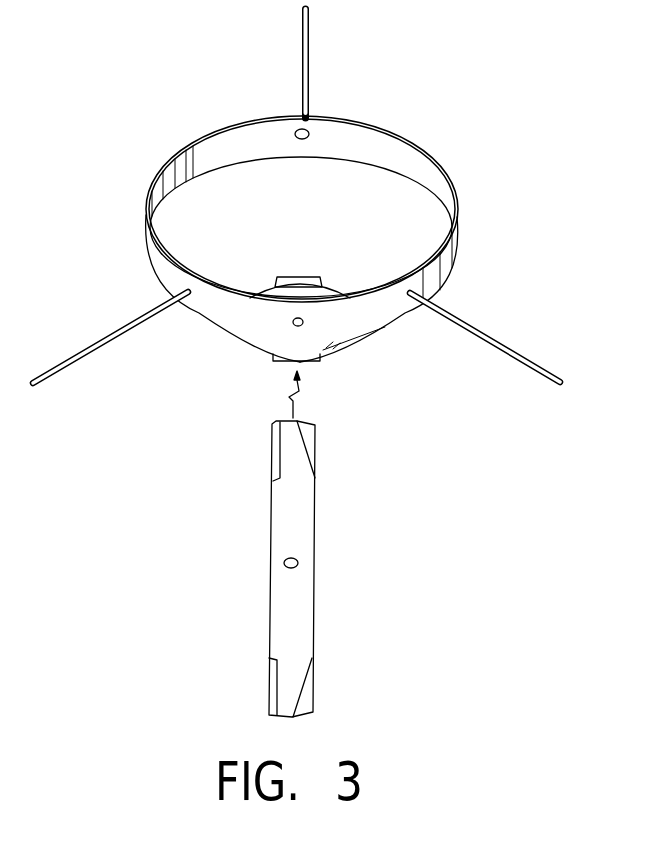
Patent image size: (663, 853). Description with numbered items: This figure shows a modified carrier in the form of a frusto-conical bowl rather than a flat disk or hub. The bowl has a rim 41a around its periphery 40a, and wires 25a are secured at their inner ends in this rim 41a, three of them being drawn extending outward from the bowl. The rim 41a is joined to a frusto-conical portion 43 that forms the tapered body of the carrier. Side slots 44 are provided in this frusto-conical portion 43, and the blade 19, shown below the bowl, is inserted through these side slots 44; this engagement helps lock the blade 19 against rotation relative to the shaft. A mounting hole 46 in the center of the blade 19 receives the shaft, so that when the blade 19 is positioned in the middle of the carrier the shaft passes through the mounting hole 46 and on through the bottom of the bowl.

The blade 19 is at (300, 622).
The wires 25a is at (302, 9).
The periphery 40a is at (393, 147).
The rim 41a is at (362, 318).
The frusto-conical portion 43 is at (237, 229).
The side slots 44 is at (296, 278).
The mounting hole 46 is at (283, 557).